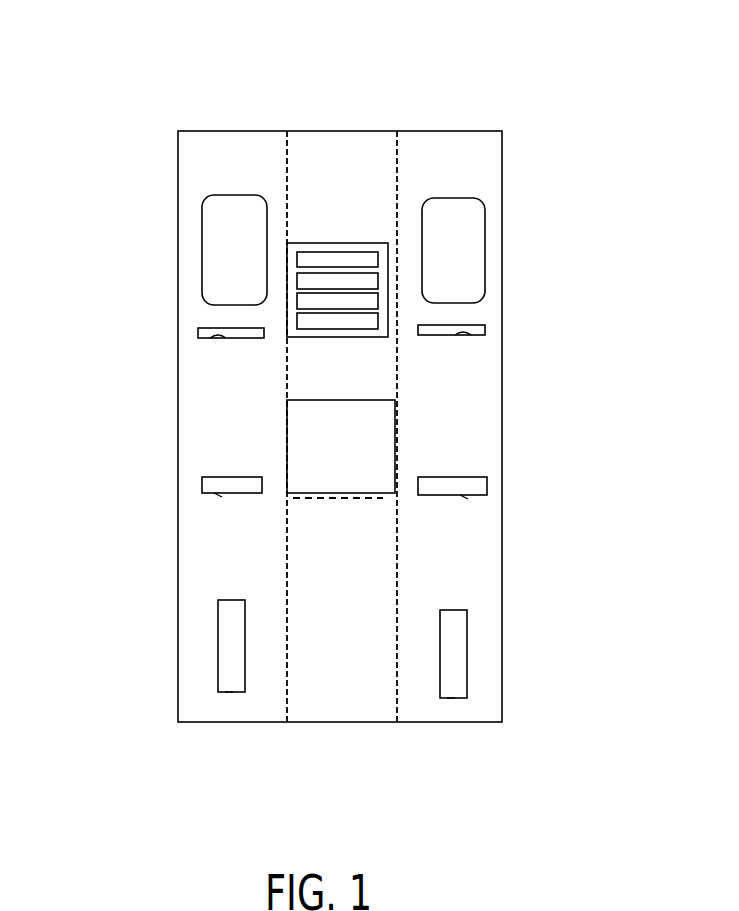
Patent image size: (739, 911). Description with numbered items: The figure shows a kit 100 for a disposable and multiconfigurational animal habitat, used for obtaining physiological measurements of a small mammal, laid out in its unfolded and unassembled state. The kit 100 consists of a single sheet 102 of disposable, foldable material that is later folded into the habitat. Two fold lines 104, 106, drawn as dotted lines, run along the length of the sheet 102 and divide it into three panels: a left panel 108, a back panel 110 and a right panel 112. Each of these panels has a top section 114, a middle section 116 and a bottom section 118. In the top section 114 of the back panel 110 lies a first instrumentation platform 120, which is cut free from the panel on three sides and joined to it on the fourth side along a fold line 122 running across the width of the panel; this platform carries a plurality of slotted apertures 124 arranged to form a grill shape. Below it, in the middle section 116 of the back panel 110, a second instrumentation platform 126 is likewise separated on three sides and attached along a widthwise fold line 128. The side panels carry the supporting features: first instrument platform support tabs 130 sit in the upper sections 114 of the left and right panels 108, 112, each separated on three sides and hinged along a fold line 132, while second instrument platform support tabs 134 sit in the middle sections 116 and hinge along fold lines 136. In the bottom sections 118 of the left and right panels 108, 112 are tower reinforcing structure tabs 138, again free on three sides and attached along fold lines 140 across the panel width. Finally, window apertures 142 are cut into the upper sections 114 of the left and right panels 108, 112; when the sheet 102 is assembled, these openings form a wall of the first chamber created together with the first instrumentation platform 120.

The kit 100 is at (130, 85).
The sheet 102 is at (512, 123).
The fold line 104 is at (302, 660).
The fold line 106 is at (394, 172).
The left panel 108 is at (245, 724).
The back panel 110 is at (304, 719).
The right panel 112 is at (452, 713).
The top section 114 is at (178, 259).
The middle section 116 is at (178, 437).
The bottom section 118 is at (178, 663).
The first instrumentation platform 120 is at (376, 298).
The fold line 122 is at (345, 340).
The slotted apertures 124 is at (372, 261).
The second instrumentation platform 126 is at (375, 455).
The fold line 128 is at (340, 500).
The first instrument platform support tabs 130 is at (203, 330).
The fold line 132 is at (218, 340).
The second instrument platform support tabs 134 is at (205, 481).
The fold line 136 is at (222, 497).
The tower reinforcing structure tabs 138 is at (226, 633).
The fold line 140 is at (232, 692).
The window aperture 142 is at (206, 221).